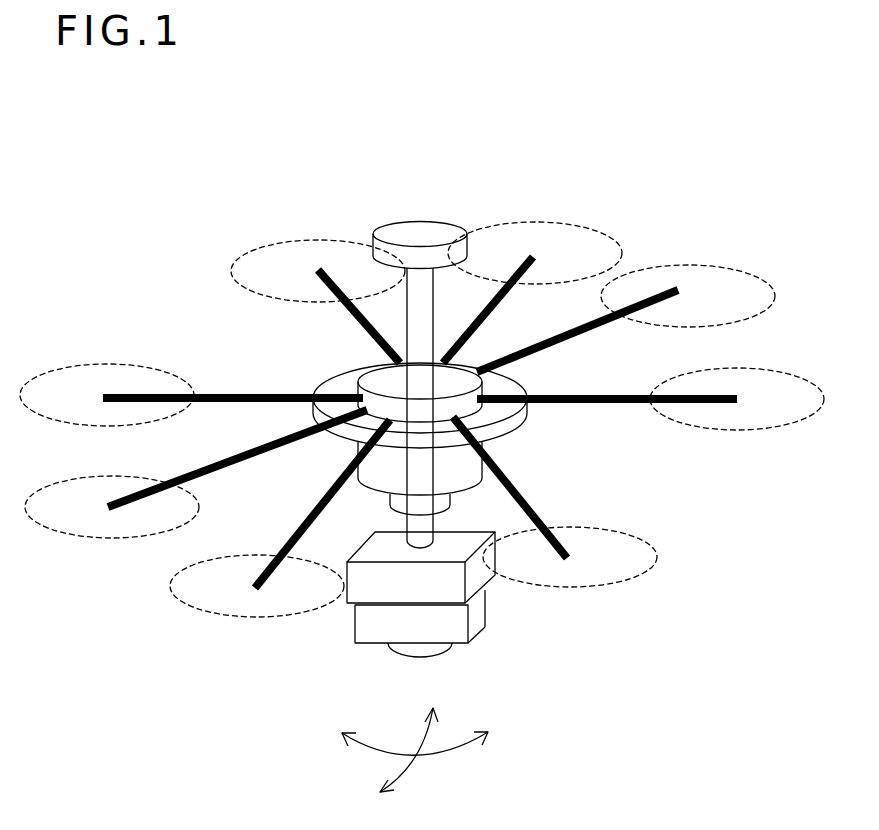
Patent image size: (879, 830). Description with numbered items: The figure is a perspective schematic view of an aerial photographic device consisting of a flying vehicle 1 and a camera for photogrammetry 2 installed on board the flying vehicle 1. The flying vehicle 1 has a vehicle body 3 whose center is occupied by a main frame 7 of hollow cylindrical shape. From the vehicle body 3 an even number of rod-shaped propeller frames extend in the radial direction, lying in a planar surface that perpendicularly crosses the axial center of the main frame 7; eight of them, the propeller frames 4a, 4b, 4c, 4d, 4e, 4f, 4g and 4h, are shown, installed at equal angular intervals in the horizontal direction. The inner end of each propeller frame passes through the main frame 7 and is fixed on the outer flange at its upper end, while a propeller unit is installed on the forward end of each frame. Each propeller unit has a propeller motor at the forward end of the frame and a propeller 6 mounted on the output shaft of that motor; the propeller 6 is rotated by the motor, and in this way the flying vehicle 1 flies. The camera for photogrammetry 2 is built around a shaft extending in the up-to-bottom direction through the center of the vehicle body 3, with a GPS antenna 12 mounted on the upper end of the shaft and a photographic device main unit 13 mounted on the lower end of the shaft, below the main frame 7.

The flying vehicle 1 is at (640, 222).
The camera for photogrammetry 2 is at (342, 650).
The vehicle body 3 is at (345, 373).
The propeller frame 4a is at (138, 396).
The propeller frame 4b is at (337, 283).
The propeller frame 4c is at (522, 262).
The propeller frame 4d is at (652, 297).
The propeller frame 4e is at (620, 402).
The propeller frame 4f is at (565, 548).
The propeller frame 4g is at (313, 512).
The propeller frame 4h is at (143, 497).
The propeller 6 is at (768, 370).
The main frame 7 is at (487, 484).
The GPS antenna 12 is at (422, 232).
The photographic device main unit 13 is at (502, 615).